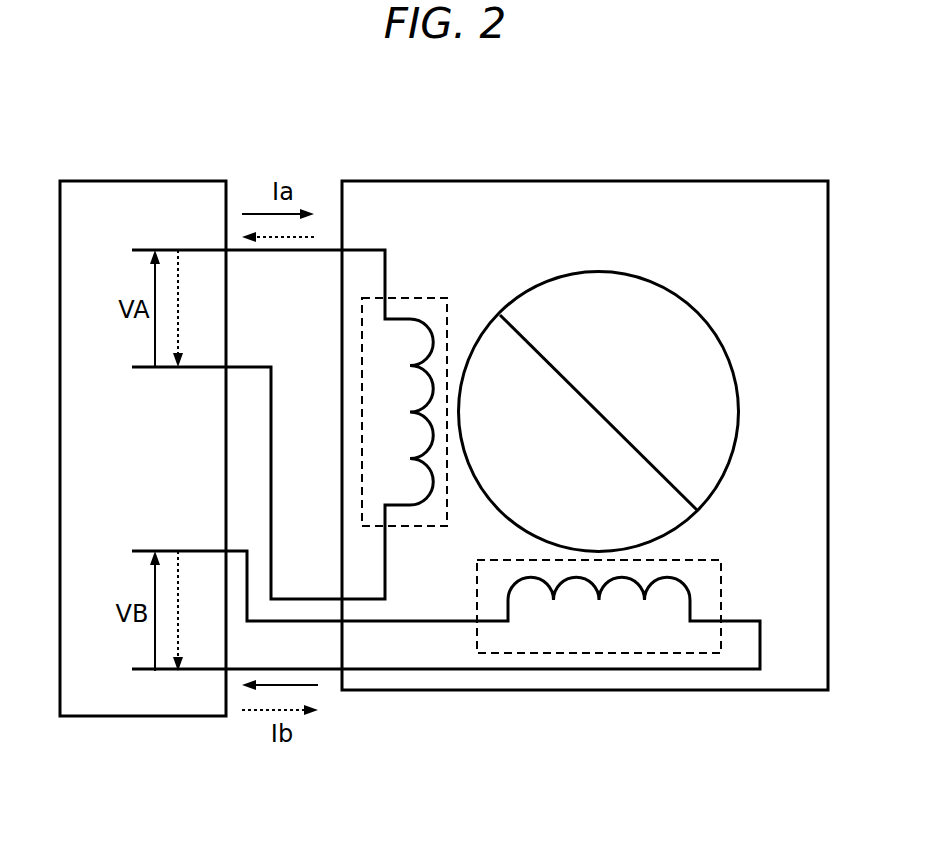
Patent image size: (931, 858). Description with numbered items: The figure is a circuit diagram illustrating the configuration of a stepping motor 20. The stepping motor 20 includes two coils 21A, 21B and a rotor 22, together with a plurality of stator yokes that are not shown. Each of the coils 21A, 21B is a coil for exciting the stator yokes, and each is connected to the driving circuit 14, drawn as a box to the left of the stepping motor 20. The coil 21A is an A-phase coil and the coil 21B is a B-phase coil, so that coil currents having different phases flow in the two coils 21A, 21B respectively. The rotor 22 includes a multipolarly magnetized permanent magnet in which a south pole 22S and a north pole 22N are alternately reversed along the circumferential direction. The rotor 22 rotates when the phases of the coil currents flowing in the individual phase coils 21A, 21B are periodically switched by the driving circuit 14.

The driving circuit 14 is at (134, 176).
The stepping motor 20 is at (546, 176).
The coil 21A is at (410, 298).
The coil 21B is at (721, 590).
The rotor 22 is at (621, 405).
The north pole 22N is at (645, 308).
The south pole 22S is at (515, 502).